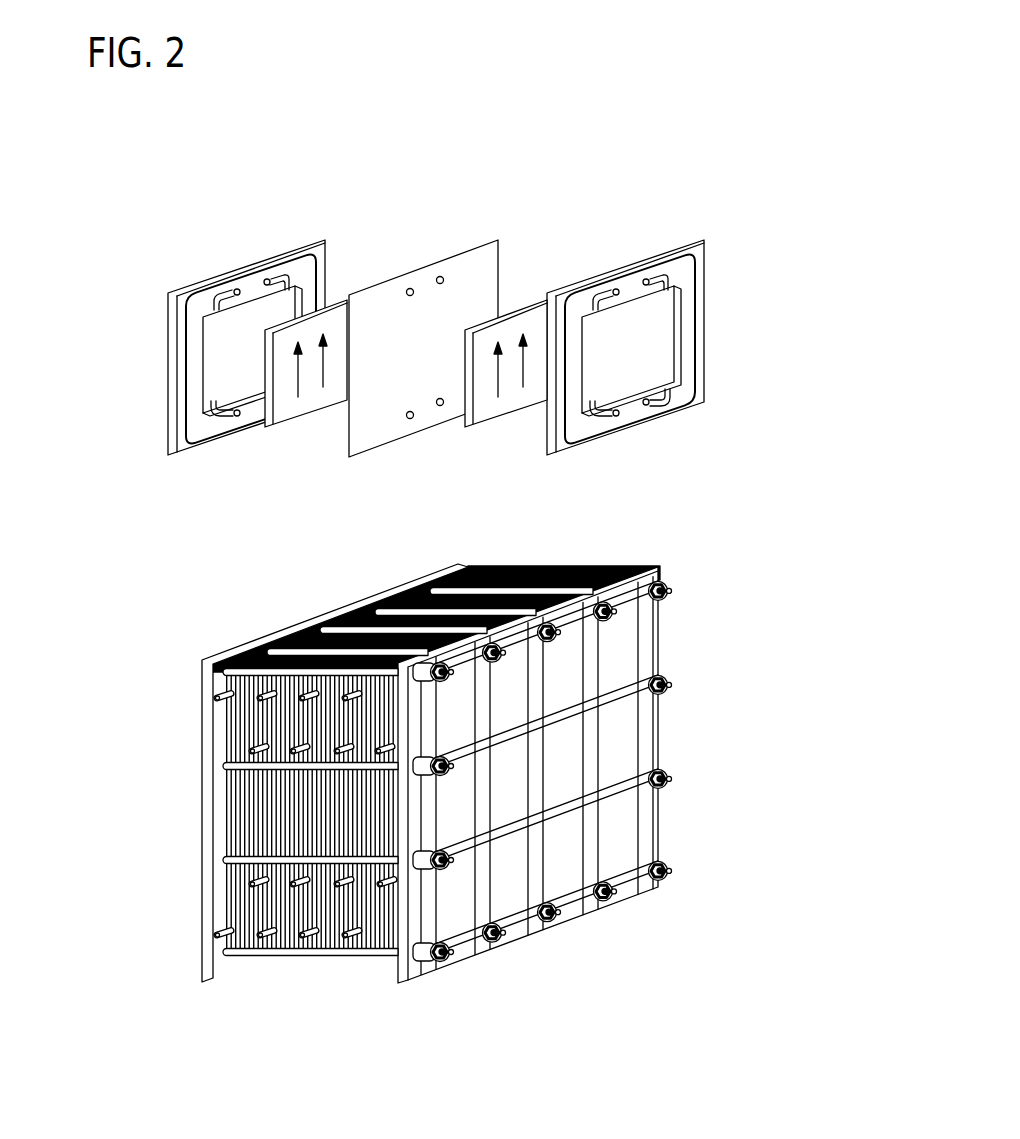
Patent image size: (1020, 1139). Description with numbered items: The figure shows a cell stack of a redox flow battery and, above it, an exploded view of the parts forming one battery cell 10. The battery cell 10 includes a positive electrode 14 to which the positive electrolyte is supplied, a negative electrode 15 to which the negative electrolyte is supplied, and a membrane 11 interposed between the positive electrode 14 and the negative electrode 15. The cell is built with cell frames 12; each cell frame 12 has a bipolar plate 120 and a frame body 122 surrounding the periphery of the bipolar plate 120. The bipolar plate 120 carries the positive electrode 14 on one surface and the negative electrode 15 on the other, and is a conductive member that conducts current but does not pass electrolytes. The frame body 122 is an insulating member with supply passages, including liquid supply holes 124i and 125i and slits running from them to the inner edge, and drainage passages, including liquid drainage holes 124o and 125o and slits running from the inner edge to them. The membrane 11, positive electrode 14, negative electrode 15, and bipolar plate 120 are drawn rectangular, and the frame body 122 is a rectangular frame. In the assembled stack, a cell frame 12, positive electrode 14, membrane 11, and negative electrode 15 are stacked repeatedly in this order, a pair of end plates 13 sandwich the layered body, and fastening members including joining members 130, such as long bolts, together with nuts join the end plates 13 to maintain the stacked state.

The battery cell 10 is at (710, 503).
The membrane 11 is at (467, 262).
The cell frame 12 is at (83, 383).
The end plate 13 is at (257, 960).
The positive electrode 14 is at (308, 404).
The negative electrode 15 is at (508, 404).
The bipolar plate 120 is at (233, 366).
The frame body 122 is at (176, 358).
The liquid drainage hole 124o is at (237, 289).
The liquid supply hole 124i is at (650, 402).
The liquid drainage hole 125o is at (266, 258).
The liquid supply hole 125i is at (237, 418).
The joining member 130 is at (337, 632).